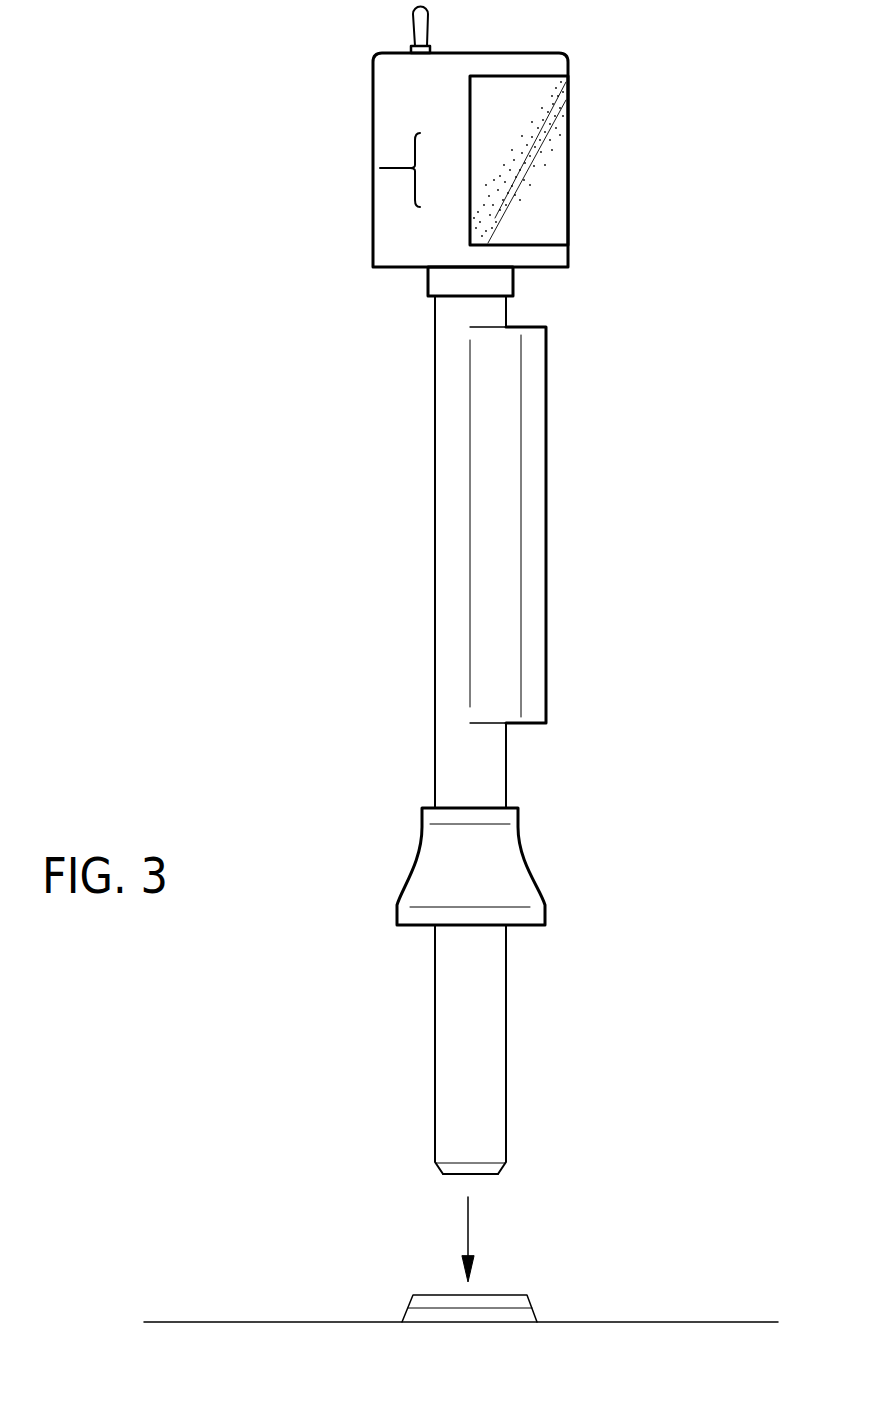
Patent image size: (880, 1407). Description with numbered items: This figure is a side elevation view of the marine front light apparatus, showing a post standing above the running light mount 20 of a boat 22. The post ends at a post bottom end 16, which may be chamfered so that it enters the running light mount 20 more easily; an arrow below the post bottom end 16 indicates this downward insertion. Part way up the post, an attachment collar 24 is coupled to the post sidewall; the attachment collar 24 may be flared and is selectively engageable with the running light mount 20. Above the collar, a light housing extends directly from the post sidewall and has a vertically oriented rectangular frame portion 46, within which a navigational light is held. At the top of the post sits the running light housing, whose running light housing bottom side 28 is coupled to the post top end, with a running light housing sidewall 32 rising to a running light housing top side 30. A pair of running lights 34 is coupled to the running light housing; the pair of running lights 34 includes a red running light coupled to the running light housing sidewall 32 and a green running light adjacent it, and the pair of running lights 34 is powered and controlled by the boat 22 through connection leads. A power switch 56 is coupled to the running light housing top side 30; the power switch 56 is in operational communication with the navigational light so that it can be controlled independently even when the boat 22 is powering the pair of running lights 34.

The post bottom end 16 is at (470, 1174).
The running light mount 20 is at (530, 1300).
The boat 22 is at (686, 1322).
The attachment collar 24 is at (510, 877).
The running light housing bottom side 28 is at (535, 267).
The running light housing top side 30 is at (490, 53).
The running light housing sidewall 32 is at (380, 168).
The pair of running lights 34 is at (543, 177).
The vertically oriented rectangular frame portion 46 is at (546, 597).
The power switch 56 is at (418, 20).